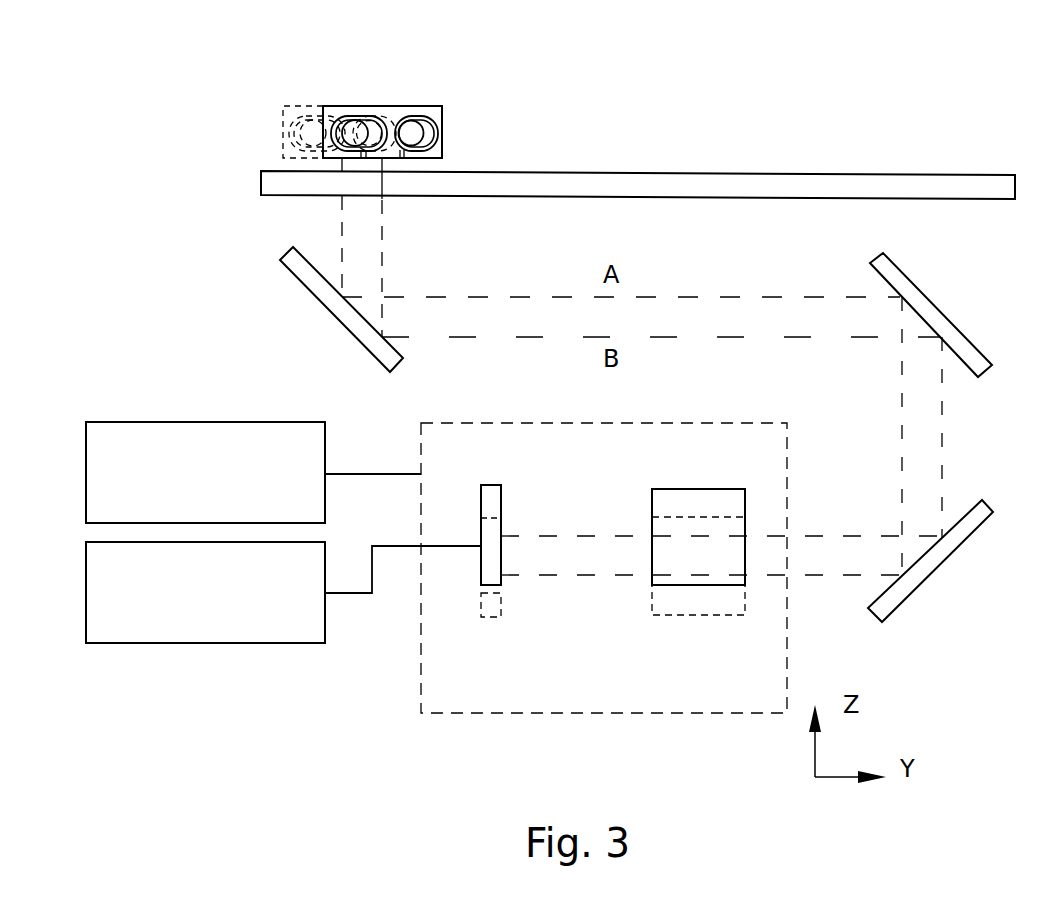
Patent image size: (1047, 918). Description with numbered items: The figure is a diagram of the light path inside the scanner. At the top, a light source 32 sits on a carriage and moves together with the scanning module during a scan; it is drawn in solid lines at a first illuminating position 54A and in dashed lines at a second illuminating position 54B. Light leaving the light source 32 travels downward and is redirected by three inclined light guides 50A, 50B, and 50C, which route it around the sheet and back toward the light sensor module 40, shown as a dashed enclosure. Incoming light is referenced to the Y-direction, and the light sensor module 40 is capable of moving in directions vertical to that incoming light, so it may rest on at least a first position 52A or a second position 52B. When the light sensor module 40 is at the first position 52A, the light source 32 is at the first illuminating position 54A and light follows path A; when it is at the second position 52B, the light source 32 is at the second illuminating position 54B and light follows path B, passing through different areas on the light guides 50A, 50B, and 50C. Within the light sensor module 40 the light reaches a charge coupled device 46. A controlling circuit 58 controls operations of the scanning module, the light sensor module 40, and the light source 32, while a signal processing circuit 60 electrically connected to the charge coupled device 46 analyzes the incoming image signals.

The light source 32 is at (462, 68).
The first illuminating position 54A is at (442, 107).
The second illuminating position 54B is at (283, 107).
The light guide 50A is at (338, 318).
The light guide 50B is at (912, 278).
The light guide 50C is at (955, 551).
The controlling circuit 58 is at (245, 422).
The signal processing circuit 60 is at (252, 643).
The light sensor module 40 is at (508, 714).
The charge coupled device 46 is at (481, 570).
The first position 52A is at (512, 478).
The second position 52B is at (518, 634).